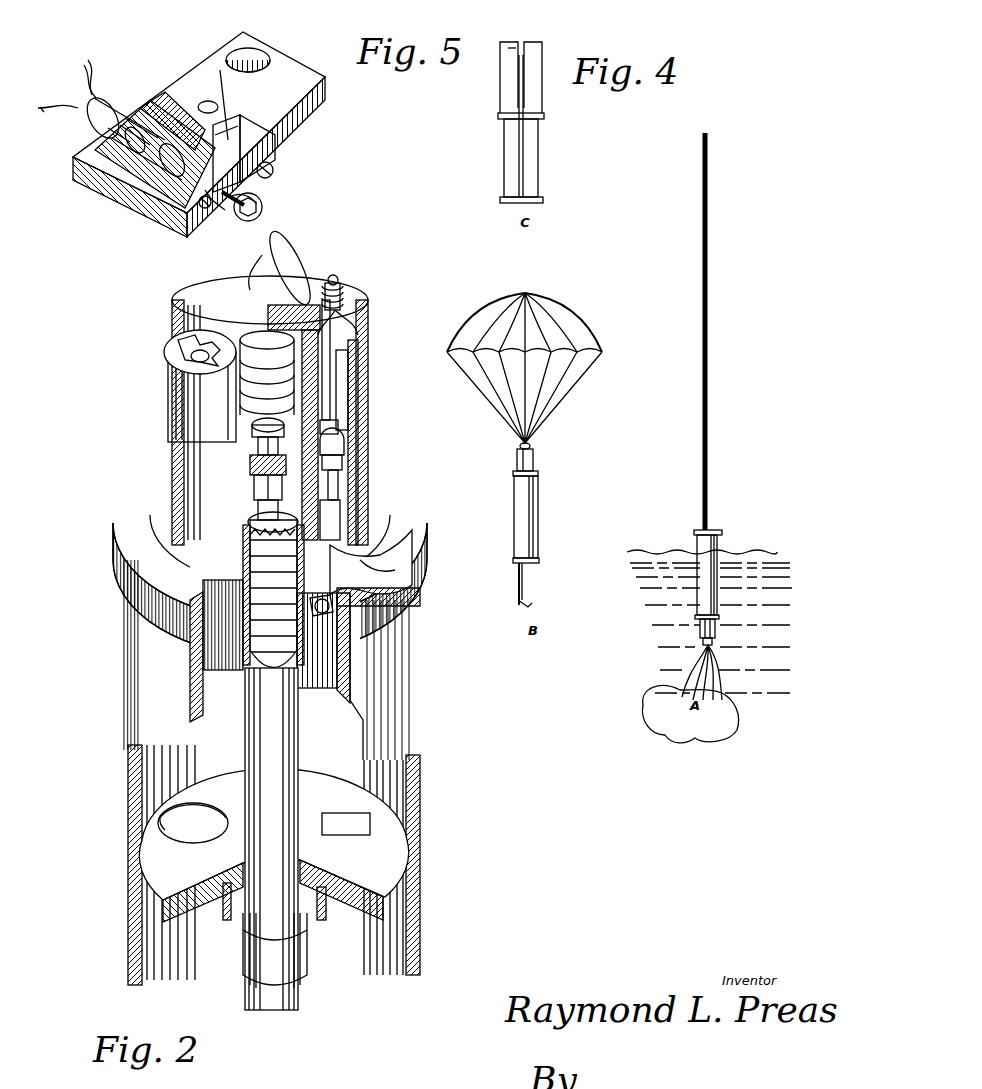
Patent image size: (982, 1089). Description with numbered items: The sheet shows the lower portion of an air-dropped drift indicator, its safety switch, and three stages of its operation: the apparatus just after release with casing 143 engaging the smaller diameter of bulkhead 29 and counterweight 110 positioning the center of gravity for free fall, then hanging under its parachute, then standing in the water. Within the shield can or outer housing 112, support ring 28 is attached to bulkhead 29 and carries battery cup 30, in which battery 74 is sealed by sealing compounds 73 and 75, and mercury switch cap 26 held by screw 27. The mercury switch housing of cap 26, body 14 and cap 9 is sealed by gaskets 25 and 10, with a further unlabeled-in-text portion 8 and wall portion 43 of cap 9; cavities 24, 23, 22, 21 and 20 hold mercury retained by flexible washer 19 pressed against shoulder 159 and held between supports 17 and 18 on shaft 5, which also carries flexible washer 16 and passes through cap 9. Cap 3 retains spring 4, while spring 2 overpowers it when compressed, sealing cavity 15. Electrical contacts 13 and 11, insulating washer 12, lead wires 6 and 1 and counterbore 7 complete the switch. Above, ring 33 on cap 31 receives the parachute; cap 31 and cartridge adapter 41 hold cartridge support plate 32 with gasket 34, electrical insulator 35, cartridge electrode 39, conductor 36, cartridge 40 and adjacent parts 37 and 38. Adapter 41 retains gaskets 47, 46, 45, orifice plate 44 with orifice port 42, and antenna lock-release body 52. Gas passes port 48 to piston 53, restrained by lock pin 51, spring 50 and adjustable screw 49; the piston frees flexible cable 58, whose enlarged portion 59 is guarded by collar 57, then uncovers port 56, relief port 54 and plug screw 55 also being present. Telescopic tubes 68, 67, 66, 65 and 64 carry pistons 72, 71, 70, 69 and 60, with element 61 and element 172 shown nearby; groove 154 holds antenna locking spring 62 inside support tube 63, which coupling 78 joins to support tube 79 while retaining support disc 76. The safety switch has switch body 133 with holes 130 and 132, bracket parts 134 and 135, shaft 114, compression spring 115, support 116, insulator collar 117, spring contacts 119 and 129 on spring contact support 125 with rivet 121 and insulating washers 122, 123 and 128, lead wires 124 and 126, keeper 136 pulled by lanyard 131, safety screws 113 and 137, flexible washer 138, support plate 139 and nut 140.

In FIG. 2, the mercury switch lead wire 1 is at (333, 276).
In FIG. 2, the spring 2 is at (338, 283).
In FIG. 2, the cap 3 is at (340, 285).
In FIG. 2, the spring 4 is at (345, 300).
In FIG. 2, the shaft 5 is at (350, 320).
In FIG. 2, the mercury switch lead wire 6 is at (355, 310).
In FIG. 2, the counterbore 7 is at (358, 330).
In FIG. 2, the housing wall 8 is at (355, 340).
In FIG. 2, the cap 9 is at (360, 345).
In FIG. 2, the gasket 10 is at (318, 350).
In FIG. 2, the electrical contact 11 is at (348, 360).
In FIG. 2, the electric insulating washer 12 is at (330, 380).
In FIG. 2, the electrical contact 13 is at (340, 390).
In FIG. 2, the body 14 is at (338, 400).
In FIG. 2, the cavity 15 is at (345, 420).
In FIG. 2, the flexible washer 16 is at (342, 460).
In FIG. 2, the support 17 is at (345, 470).
In FIG. 2, the support 18 is at (348, 440).
In FIG. 2, the flexible washer 19 is at (338, 480).
In FIG. 2, the cavity 20 is at (338, 490).
In FIG. 2, the cavity 21 is at (345, 515).
In FIG. 2, the cavity 22 is at (340, 510).
In FIG. 2, the cavity 23 is at (330, 520).
In FIG. 2, the cavity 24 is at (335, 530).
In FIG. 2, the gasket 25 is at (335, 540).
In FIG. 2, the mercury switch cap 26 is at (340, 545).
In FIG. 2, the screw 27 is at (355, 550).
In FIG. 2, the support ring 28 is at (370, 560).
In FIG. 4, the bulkhead 29 is at (536, 118).
In FIG. 2, the bulkhead 29 is at (420, 600).
In FIG. 2, the battery cup 30 is at (210, 315).
In FIG. 2, the cap 31 is at (312, 300).
In FIG. 2, the cartridge support plate 32 is at (305, 290).
In FIG. 2, the ring 33 is at (296, 262).
In FIG. 2, the gasket 34 is at (285, 245).
In FIG. 2, the electrical insulator 35 is at (278, 303).
In FIG. 2, the insulated electrical conductor 36 is at (256, 270).
In FIG. 2, the wire 37 is at (262, 290).
In FIG. 2, the plate 38 is at (265, 310).
In FIG. 2, the cartridge electrode 39 is at (245, 320).
In FIG. 2, the cartridge 40 is at (240, 330).
In FIG. 2, the cartridge adapter 41 is at (215, 335).
In FIG. 2, the orifice port 42 is at (180, 352).
In FIG. 2, the guide 43 is at (345, 405).
In FIG. 2, the orifice plate 44 is at (250, 395).
In FIG. 2, the gasket 45 is at (200, 400).
In FIG. 2, the gasket 46 is at (215, 430).
In FIG. 2, the gasket 47 is at (220, 445).
In FIG. 2, the port 48 is at (252, 428).
In FIG. 2, the adjustable screw 49 is at (258, 446).
In FIG. 2, the spring 50 is at (250, 462).
In FIG. 2, the lock pin 51 is at (254, 480).
In FIG. 2, the antenna lock-release body 52 is at (258, 505).
In FIG. 2, the piston 53 is at (240, 495).
In FIG. 2, the relief port 54 is at (245, 508).
In FIG. 2, the plug screw 55 is at (210, 520).
In FIG. 2, the port 56 is at (240, 525).
In FIG. 2, the collar 57 is at (230, 540).
In FIG. 2, the flexible cable 58 is at (245, 540).
In FIG. 2, the enlarged cable portion 59 is at (250, 470).
In FIG. 2, the piston 60 is at (135, 600).
In FIG. 2, the shoulder 61 is at (200, 575).
In FIG. 2, the antenna locking spring 62 is at (190, 620).
In FIG. 2, the support tube 63 is at (203, 618).
In FIG. 2, the telescopic tube 64 is at (192, 640).
In FIG. 2, the telescopic tube 65 is at (220, 660).
In FIG. 2, the telescopic tube 66 is at (192, 680).
In FIG. 2, the telescopic tube 67 is at (192, 705).
In FIG. 2, the telescopic tube 68 is at (250, 672).
In FIG. 2, the piston 69 is at (215, 640).
In FIG. 2, the piston 70 is at (192, 660).
In FIG. 2, the piston 71 is at (225, 675).
In FIG. 2, the piston 72 is at (175, 832).
In FIG. 2, the sealing compound 73 is at (205, 333).
In FIG. 2, the battery 74 is at (235, 480).
In FIG. 2, the sealing compound 75 is at (200, 505).
In FIG. 2, the support disc 76 is at (385, 847).
In FIG. 2, the coupling 78 is at (282, 950).
In FIG. 2, the support tube 79 is at (270, 1003).
In FIG. 4, the counterweight 110 is at (535, 606).
In FIG. 4, the shield can or outer housing 112 is at (516, 148).
In FIG. 2, the shield can or outer housing 112 is at (128, 970).
In FIG. 5, the safety screw 113 is at (205, 195).
In FIG. 5, the shaft 114 is at (175, 190).
In FIG. 5, the compression spring 115 is at (155, 185).
In FIG. 5, the support 116 is at (135, 180).
In FIG. 5, the electrical insulator collar 117 is at (120, 170).
In FIG. 5, the spring contact 119 is at (75, 158).
In FIG. 5, the rivet 121 is at (100, 146).
In FIG. 5, the electrical insulating washer 122 is at (118, 136).
In FIG. 5, the electrical insulating washer 123 is at (98, 108).
In FIG. 5, the lead wire 124 is at (53, 101).
In FIG. 5, the spring contact support 125 is at (94, 96).
In FIG. 5, the safety switch lead wire 126 is at (90, 62).
In FIG. 5, the electrical insulating washer 128 is at (160, 105).
In FIG. 5, the spring contact 129 is at (170, 130).
In FIG. 5, the hole 130 is at (208, 100).
In FIG. 5, the lanyard 131 is at (226, 135).
In FIG. 2, the lanyard 131 is at (395, 556).
In FIG. 5, the hole 132 is at (252, 64).
In FIG. 5, the switch body 133 is at (292, 72).
In FIG. 5, the bracket 134 is at (262, 158).
In FIG. 5, the bracket 135 is at (265, 170).
In FIG. 5, the keeper 136 is at (265, 178).
In FIG. 5, the safety screw 137 is at (272, 170).
In FIG. 5, the flexible washer 138 is at (262, 190).
In FIG. 5, the support plate 139 is at (262, 194).
In FIG. 5, the nut 140 is at (262, 202).
In FIG. 4, the casing 143 is at (510, 95).
In FIG. 2, the circular groove 154 is at (350, 676).
In FIG. 2, the shoulder 159 is at (345, 495).
In FIG. 2, the liner 172 is at (203, 712).